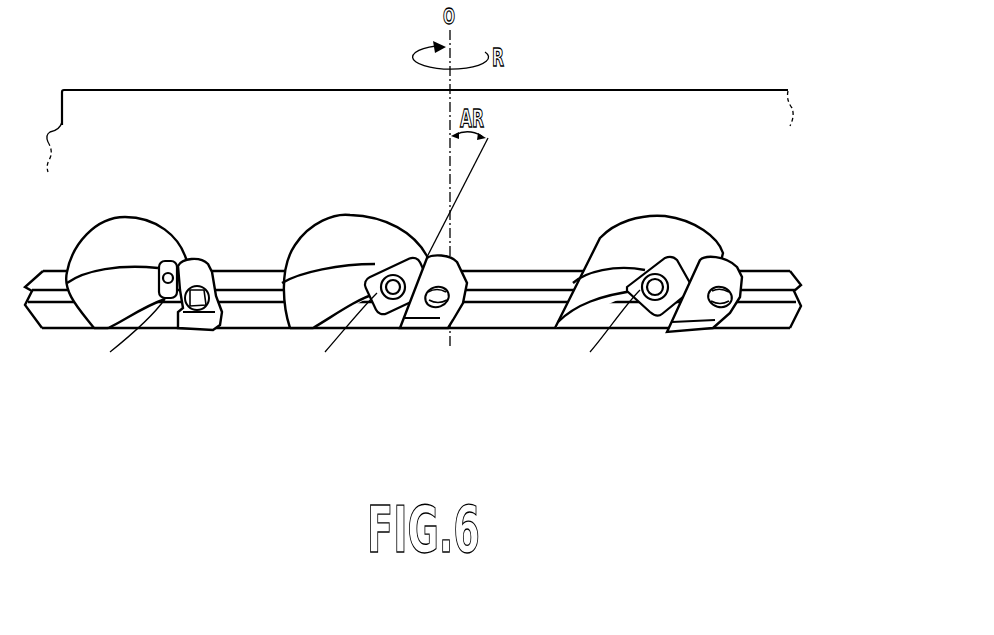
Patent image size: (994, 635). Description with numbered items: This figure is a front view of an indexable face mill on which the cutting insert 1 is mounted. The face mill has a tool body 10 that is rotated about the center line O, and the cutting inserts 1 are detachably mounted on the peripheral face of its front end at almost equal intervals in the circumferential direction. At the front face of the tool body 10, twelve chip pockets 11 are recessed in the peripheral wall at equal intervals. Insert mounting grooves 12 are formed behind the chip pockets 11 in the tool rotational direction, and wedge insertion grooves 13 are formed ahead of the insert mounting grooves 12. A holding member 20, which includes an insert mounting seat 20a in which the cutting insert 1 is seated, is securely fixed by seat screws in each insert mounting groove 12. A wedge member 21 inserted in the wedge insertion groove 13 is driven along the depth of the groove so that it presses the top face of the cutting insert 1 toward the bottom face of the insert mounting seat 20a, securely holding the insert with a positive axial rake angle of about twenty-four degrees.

The cutting insert 1 is at (177, 355).
The tool body 10 is at (803, 76).
The chip pocket 11 is at (123, 237).
The insert mounting groove 12 is at (212, 330).
The wedge insertion groove 13 is at (152, 320).
The holding member 20 is at (212, 246).
The insert mounting seat 20a is at (180, 330).
The wedge member 21 is at (158, 334).